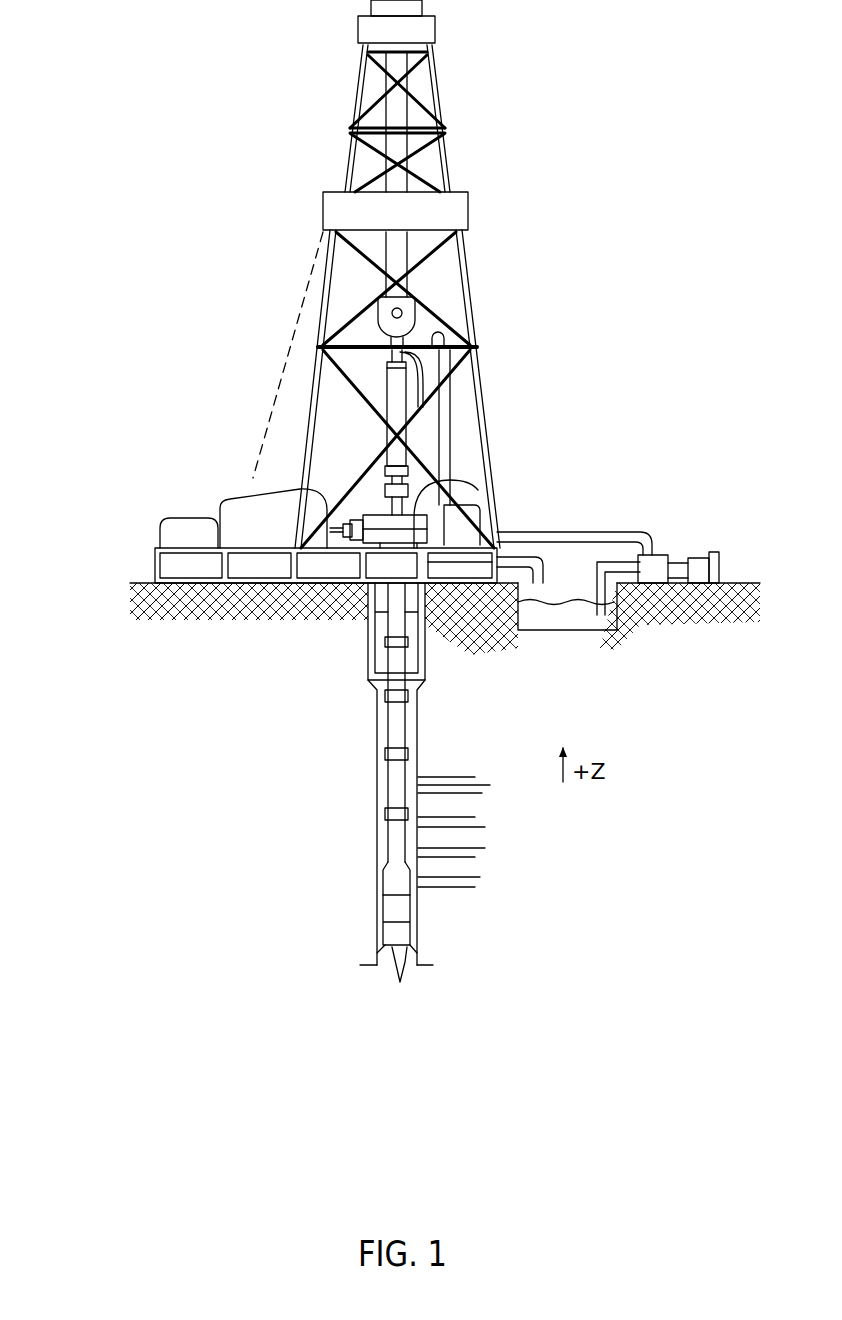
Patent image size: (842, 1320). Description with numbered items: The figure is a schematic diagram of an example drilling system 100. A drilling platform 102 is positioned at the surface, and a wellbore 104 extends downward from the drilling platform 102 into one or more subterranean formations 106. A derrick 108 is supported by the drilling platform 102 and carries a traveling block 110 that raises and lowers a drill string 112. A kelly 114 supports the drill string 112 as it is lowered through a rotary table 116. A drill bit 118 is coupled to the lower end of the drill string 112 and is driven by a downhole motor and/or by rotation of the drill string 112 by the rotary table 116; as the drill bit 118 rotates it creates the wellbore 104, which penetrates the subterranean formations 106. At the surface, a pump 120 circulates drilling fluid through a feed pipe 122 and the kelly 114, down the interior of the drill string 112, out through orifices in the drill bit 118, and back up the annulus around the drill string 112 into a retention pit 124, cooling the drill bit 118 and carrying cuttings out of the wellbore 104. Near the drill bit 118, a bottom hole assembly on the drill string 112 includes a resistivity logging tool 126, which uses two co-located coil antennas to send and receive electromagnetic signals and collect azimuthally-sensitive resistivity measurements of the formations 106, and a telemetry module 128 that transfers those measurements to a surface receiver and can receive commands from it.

The drilling system 100 is at (612, 256).
The drilling platform 102 is at (150, 562).
The wellbore 104 is at (417, 740).
The subterranean formations 106 is at (493, 775).
The derrick 108 is at (438, 105).
The traveling block 110 is at (407, 313).
The drill string 112 is at (398, 712).
The kelly 114 is at (393, 398).
The rotary table 116 is at (478, 486).
The drill bit 118 is at (413, 950).
The pump 120 is at (652, 554).
The feed pipe 122 is at (620, 532).
The retention pit 124 is at (597, 632).
The resistivity logging tool 126 is at (388, 912).
The telemetry module 128 is at (388, 876).